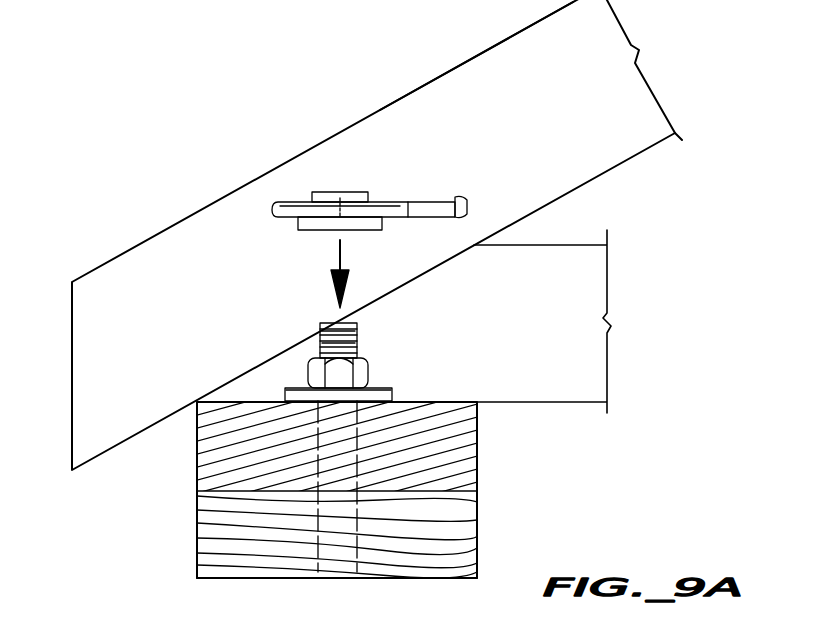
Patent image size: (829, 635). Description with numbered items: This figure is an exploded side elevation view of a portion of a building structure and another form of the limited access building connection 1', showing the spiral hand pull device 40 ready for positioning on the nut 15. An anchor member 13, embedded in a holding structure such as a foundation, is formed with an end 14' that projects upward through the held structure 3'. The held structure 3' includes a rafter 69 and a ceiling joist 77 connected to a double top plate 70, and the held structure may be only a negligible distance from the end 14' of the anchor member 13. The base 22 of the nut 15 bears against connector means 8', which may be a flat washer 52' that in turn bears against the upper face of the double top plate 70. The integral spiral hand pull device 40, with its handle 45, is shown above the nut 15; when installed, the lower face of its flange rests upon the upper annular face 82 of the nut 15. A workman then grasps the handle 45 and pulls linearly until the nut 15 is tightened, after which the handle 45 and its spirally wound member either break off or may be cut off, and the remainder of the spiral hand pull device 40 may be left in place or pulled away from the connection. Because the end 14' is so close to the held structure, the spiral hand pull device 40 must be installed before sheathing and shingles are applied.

The rafter 69 is at (465, 62).
The spiral hand pull device 40 is at (330, 144).
The handle 45 is at (463, 200).
The limited access building connection 1' is at (751, 175).
The ceiling joist 77 is at (563, 258).
The end 14' is at (303, 319).
The upper annular face 82 is at (362, 359).
The nut 15 is at (372, 368).
The flat washer 52' is at (376, 378).
The connector means 8' is at (309, 356).
The base 22 is at (337, 401).
The double top plate 70 is at (480, 470).
The held structure 3' is at (588, 474).
The anchor member 13 is at (317, 532).